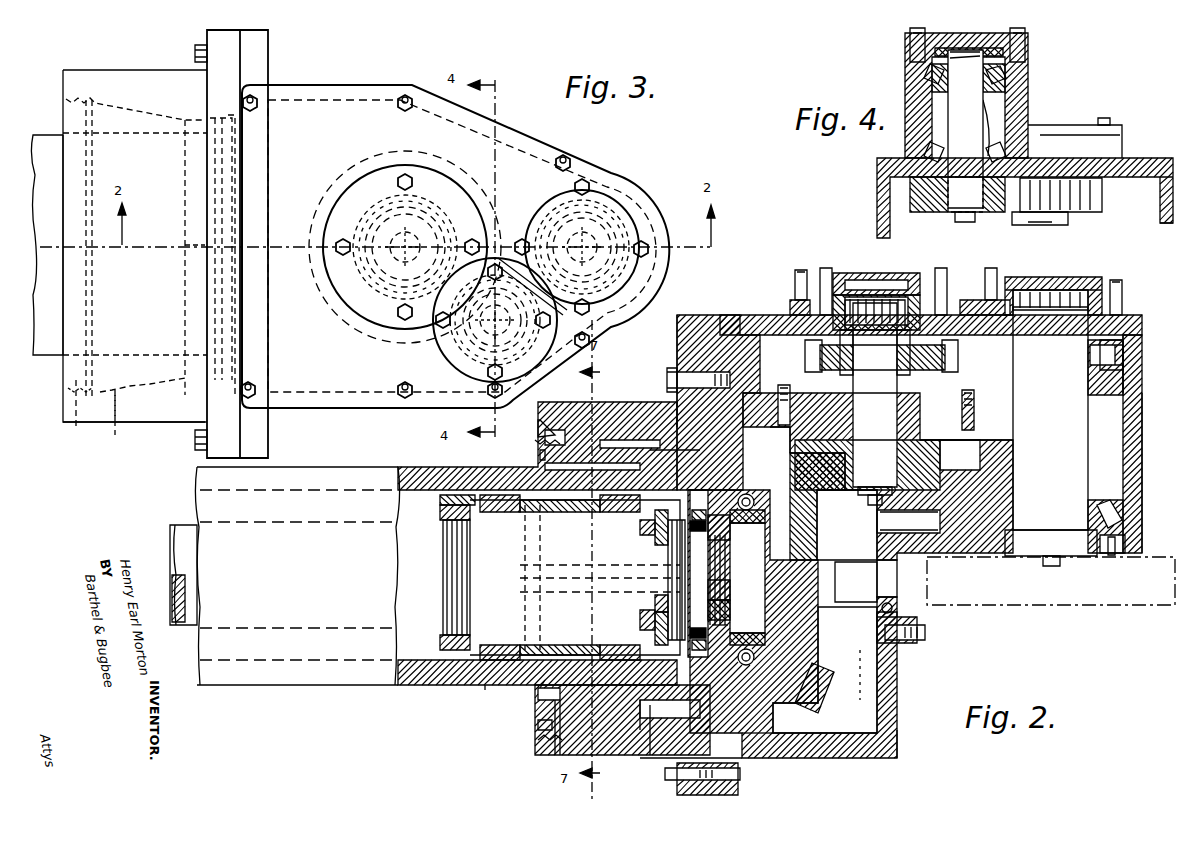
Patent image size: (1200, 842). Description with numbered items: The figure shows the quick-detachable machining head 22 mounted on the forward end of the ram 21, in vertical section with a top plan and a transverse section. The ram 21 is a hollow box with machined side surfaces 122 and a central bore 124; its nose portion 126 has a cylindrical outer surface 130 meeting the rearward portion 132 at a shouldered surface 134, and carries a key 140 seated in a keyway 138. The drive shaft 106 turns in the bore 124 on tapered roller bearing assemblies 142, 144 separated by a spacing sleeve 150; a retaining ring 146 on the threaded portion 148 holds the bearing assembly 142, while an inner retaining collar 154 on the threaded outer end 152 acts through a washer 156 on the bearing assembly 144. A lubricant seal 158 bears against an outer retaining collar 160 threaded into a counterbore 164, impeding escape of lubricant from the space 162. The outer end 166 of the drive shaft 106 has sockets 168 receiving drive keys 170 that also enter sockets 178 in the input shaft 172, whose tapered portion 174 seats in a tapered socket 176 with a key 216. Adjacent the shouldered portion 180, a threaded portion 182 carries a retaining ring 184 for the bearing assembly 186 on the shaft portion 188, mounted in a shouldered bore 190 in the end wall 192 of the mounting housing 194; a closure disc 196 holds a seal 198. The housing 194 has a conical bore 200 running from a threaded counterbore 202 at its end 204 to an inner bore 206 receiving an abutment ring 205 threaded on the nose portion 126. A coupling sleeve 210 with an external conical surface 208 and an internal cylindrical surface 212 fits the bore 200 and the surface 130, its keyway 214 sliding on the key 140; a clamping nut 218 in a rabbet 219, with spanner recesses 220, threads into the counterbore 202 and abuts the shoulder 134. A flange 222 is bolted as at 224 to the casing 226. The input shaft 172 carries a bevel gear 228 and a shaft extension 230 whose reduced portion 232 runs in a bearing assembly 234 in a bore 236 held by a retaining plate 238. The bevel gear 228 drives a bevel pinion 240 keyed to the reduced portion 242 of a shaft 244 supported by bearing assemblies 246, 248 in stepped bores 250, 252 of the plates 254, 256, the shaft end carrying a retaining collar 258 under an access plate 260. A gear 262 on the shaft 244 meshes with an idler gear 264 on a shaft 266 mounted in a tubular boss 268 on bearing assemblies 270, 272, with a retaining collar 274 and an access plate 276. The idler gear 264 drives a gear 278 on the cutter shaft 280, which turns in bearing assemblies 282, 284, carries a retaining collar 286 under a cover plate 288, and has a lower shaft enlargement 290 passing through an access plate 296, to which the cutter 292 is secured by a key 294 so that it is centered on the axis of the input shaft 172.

In FIG. 2, the ram 21 is at (409, 698).
In FIG. 3, the machining head 22 is at (343, 78).
In FIG. 2, the machining head 22 is at (770, 304).
In FIG. 2, the drive shaft 106 is at (186, 550).
In FIG. 3, the machined side surfaces 122 is at (58, 400).
In FIG. 2, the machined side surfaces 122 is at (500, 700).
In FIG. 2, the bore 124 is at (407, 472).
In FIG. 2, the nose portion 126 is at (590, 660).
In FIG. 3, the cylindrical outer surface 130 is at (75, 346).
In FIG. 2, the cylindrical outer surface 130 is at (560, 690).
In FIG. 3, the rearward portion 132 is at (42, 360).
In FIG. 3, the shouldered surface 134 is at (55, 156).
In FIG. 2, the keyway 138 is at (598, 432).
In FIG. 3, the key 140 is at (195, 247).
In FIG. 2, the key 140 is at (620, 412).
In FIG. 2, the tapered roller bearing assembly 142 is at (575, 577).
In FIG. 2, the tapered roller bearing assembly 144 is at (615, 515).
In FIG. 2, the retaining ring 146 is at (455, 508).
In FIG. 2, the threaded portion 148 is at (455, 558).
In FIG. 2, the spacing sleeve 150 is at (519, 577).
In FIG. 2, the threaded outer end 152 is at (668, 555).
In FIG. 2, the inner retaining collar 154 is at (655, 540).
In FIG. 2, the washer 156 is at (640, 530).
In FIG. 2, the lubricant seal 158 is at (670, 618).
In FIG. 2, the outer retaining collar 160 is at (648, 730).
In FIG. 2, the space 162 is at (480, 690).
In FIG. 2, the threaded counterbore 164 is at (650, 745).
In FIG. 2, the outer end 166 is at (728, 585).
In FIG. 2, the sockets 168 is at (728, 600).
In FIG. 2, the drive keys 170 is at (668, 600).
In FIG. 2, the input shaft 172 is at (825, 670).
In FIG. 2, the tapered reduced diameter portion 174 is at (695, 568).
In FIG. 2, the tapered socket 176 is at (610, 598).
In FIG. 2, the sockets 178 is at (735, 578).
In FIG. 2, the shouldered portion 180 is at (732, 626).
In FIG. 2, the threaded portion 182 is at (735, 610).
In FIG. 2, the retaining ring 184 is at (735, 560).
In FIG. 2, the antifriction bearing assembly 186 is at (754, 497).
In FIG. 2, the shaft portion 188 is at (747, 580).
In FIG. 2, the shouldered bore 190 is at (770, 470).
In FIG. 2, the end wall 192 is at (770, 698).
In FIG. 3, the mounting housing 194 is at (163, 432).
In FIG. 2, the mounting housing 194 is at (656, 765).
In FIG. 3, the closure disc 196 is at (222, 176).
In FIG. 2, the closure disc 196 is at (735, 540).
In FIG. 2, the seal 198 is at (702, 530).
In FIG. 2, the conical bore 200 is at (650, 445).
In FIG. 3, the threaded counterbore 202 is at (78, 426).
In FIG. 2, the threaded counterbore 202 is at (543, 762).
In FIG. 2, the end 204 is at (535, 745).
In FIG. 2, the abutment ring 205 is at (695, 712).
In FIG. 3, the inner bore 206 is at (232, 124).
In FIG. 2, the inner bore 206 is at (710, 795).
In FIG. 3, the external conical surface 208 is at (117, 426).
In FIG. 2, the external conical surface 208 is at (556, 780).
In FIG. 2, the coupling sleeve 210 is at (590, 695).
In FIG. 3, the internal cylindrical surface 212 is at (137, 382).
In FIG. 2, the internal cylindrical surface 212 is at (600, 770).
In FIG. 3, the keyway 214 is at (94, 250).
In FIG. 2, the keyway 214 is at (556, 425).
In FIG. 2, the key 216 is at (590, 583).
In FIG. 2, the clamping nut 218 is at (528, 450).
In FIG. 2, the rabbet 219 is at (530, 452).
In FIG. 2, the end recesses 220 is at (545, 447).
In FIG. 3, the flange 222 is at (207, 38).
In FIG. 2, the flange 222 is at (700, 340).
In FIG. 3, the bolts 224 is at (196, 52).
In FIG. 2, the bolts 224 is at (673, 372).
In FIG. 3, the casing 226 is at (278, 53).
In FIG. 4, the casing 226 is at (1160, 228).
In FIG. 2, the casing 226 is at (1143, 444).
In FIG. 2, the bevel gear 228 is at (838, 683).
In FIG. 2, the shaft extension 230 is at (856, 582).
In FIG. 2, the reduced diameter portion 232 is at (890, 586).
In FIG. 2, the anti-friction bearing assembly 234 is at (876, 610).
In FIG. 2, the bore 236 is at (895, 548).
In FIG. 2, the retaining plate 238 is at (925, 632).
In FIG. 2, the bevel pinion 240 is at (862, 492).
In FIG. 2, the reduced diameter portion 242 is at (867, 410).
In FIG. 3, the shaft 244 is at (345, 282).
In FIG. 4, the shaft 244 is at (1060, 222).
In FIG. 2, the shaft 244 is at (875, 404).
In FIG. 2, the tapered roller bearing assembly 246 is at (842, 405).
In FIG. 2, the tapered roller bearing assembly 248 is at (875, 315).
In FIG. 2, the stepped bore 250 is at (940, 410).
In FIG. 2, the stepped bore 252 is at (800, 318).
In FIG. 3, the plate 254 is at (335, 190).
In FIG. 2, the plate 254 is at (980, 400).
In FIG. 3, the cover plate 256 is at (525, 160).
In FIG. 4, the cover plate 256 is at (1160, 165).
In FIG. 2, the cover plate 256 is at (972, 305).
In FIG. 2, the retaining collar 258 is at (858, 292).
In FIG. 3, the access plate 260 is at (385, 278).
In FIG. 2, the access plate 260 is at (895, 275).
In FIG. 3, the gear 262 is at (382, 187).
In FIG. 4, the gear 262 is at (1102, 200).
In FIG. 2, the gear 262 is at (918, 355).
In FIG. 3, the idler gear 264 is at (455, 368).
In FIG. 4, the idler gear 264 is at (928, 205).
In FIG. 3, the shaft 266 is at (425, 338).
In FIG. 4, the shaft 266 is at (965, 129).
In FIG. 4, the tubular boss 268 is at (1025, 78).
In FIG. 4, the tapered roller bearing assembly 270 is at (1012, 96).
In FIG. 4, the tapered roller bearing assembly 272 is at (1000, 150).
In FIG. 4, the retaining collar 274 is at (1028, 42).
In FIG. 3, the access plate 276 is at (472, 380).
In FIG. 4, the access plate 276 is at (905, 45).
In FIG. 3, the gear 278 is at (640, 205).
In FIG. 2, the gear 278 is at (1128, 357).
In FIG. 3, the cutter shaft 280 is at (632, 226).
In FIG. 2, the cutter shaft 280 is at (1050, 418).
In FIG. 2, the tapered roller bearing assembly 282 is at (1132, 520).
In FIG. 2, the tapered roller bearing assembly 284 is at (1118, 320).
In FIG. 2, the retaining collar 286 is at (1092, 285).
In FIG. 3, the cover plate 288 is at (612, 240).
In FIG. 2, the cover plate 288 is at (1060, 280).
In FIG. 2, the shaft enlargement 290 is at (1051, 543).
In FIG. 2, the cutter 292 is at (1060, 608).
In FIG. 2, the key 294 is at (1055, 566).
In FIG. 2, the access plate 296 is at (1135, 546).